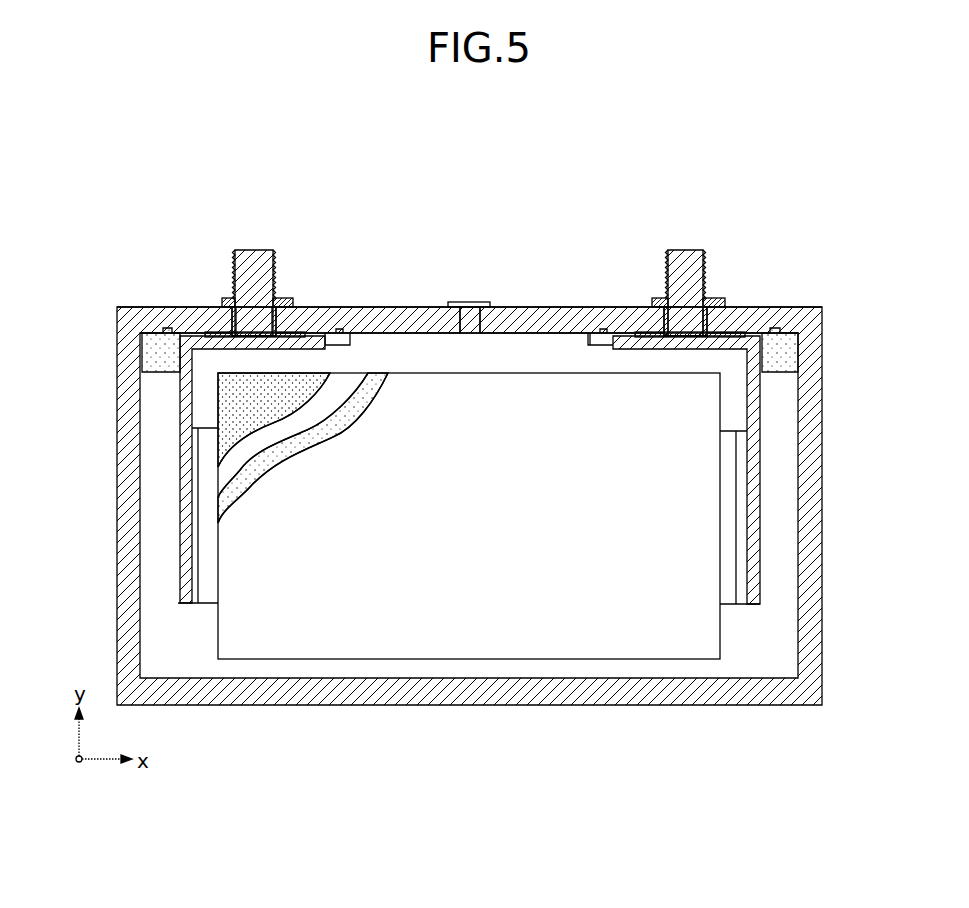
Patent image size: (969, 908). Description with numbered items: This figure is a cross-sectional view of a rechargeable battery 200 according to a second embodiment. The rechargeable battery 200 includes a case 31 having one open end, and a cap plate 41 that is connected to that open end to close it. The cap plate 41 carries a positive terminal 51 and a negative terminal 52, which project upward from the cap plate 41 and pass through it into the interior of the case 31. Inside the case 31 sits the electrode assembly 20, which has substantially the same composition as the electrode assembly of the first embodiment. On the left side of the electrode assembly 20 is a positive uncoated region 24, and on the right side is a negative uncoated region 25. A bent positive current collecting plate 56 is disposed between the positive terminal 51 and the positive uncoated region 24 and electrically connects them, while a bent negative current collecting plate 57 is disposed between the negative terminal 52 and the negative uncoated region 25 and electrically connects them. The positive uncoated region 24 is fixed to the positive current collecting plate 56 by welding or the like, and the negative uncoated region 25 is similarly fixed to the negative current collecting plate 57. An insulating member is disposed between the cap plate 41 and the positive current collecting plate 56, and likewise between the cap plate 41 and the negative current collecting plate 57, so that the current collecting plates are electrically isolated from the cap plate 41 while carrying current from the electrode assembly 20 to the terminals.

The rechargeable battery 200 is at (508, 126).
The electrode assembly 20 is at (543, 659).
The positive uncoated region 24 is at (208, 573).
The negative uncoated region 25 is at (728, 590).
The case 31 is at (440, 690).
The cap plate 41 is at (533, 322).
The positive terminal 51 is at (255, 264).
The negative terminal 52 is at (684, 262).
The positive current collecting plate 56 is at (178, 422).
The negative current collecting plate 57 is at (760, 463).